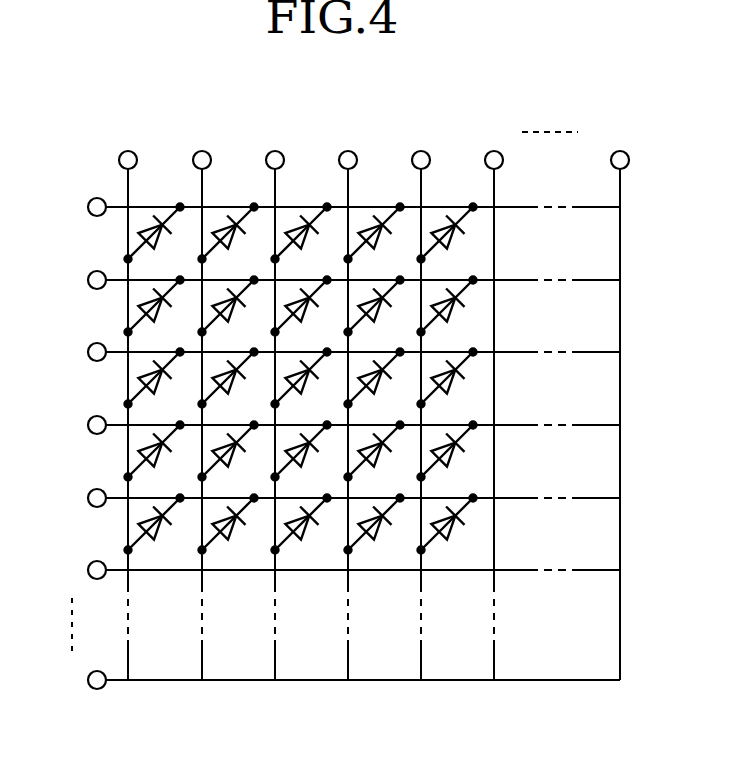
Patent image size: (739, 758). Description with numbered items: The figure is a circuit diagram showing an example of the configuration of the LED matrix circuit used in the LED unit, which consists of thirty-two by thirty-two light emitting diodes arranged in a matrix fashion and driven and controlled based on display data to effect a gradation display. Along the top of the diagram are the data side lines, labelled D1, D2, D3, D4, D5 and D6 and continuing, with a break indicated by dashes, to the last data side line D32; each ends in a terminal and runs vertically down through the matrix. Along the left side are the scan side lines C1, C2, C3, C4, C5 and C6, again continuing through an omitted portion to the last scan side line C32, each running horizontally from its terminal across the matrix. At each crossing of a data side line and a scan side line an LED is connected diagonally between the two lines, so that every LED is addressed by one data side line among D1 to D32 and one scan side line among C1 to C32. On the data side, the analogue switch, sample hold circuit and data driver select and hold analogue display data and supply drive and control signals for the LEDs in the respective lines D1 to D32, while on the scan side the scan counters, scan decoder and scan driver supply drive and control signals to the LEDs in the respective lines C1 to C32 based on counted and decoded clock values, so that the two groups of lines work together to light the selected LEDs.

The data side row line D1 is at (127, 397).
The data side row line D2 is at (201, 397).
The data side row line D3 is at (274, 397).
The data side row line D4 is at (347, 397).
The data side row line D5 is at (420, 397).
The data side row line D6 is at (493, 397).
The data side row line D32 is at (616, 397).
The scan side column line C1 is at (336, 207).
The scan side column line C2 is at (335, 280).
The scan side column line C3 is at (335, 352).
The scan side column line C4 is at (335, 425).
The scan side column line C5 is at (335, 498).
The scan side column line C6 is at (335, 570).
The scan side column line C32 is at (332, 680).